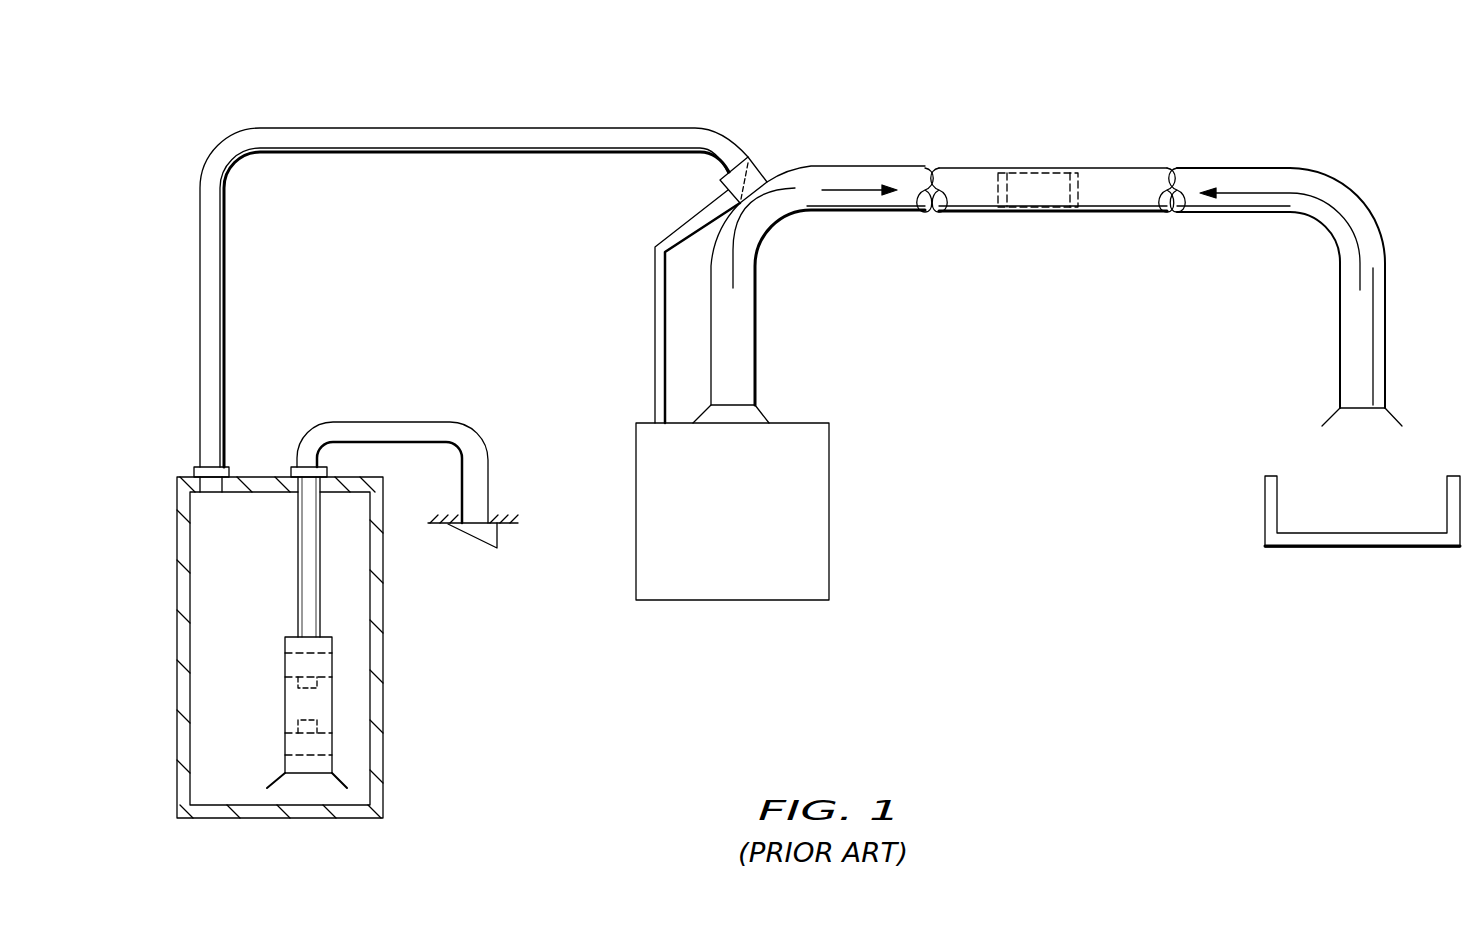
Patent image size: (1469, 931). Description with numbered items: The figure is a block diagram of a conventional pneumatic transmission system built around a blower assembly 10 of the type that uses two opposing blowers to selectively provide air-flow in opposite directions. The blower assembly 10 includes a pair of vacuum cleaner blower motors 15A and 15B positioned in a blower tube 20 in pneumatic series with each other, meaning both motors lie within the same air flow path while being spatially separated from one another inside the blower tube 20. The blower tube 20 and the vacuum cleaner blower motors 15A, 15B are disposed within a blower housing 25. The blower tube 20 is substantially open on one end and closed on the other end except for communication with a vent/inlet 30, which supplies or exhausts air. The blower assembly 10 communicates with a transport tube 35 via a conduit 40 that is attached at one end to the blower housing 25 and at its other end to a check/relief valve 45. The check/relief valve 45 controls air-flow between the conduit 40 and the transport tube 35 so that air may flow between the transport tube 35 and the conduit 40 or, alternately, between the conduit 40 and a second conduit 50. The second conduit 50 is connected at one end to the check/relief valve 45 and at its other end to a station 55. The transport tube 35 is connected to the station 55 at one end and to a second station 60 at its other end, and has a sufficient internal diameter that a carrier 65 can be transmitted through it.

The blower assembly 10 is at (156, 654).
The vacuum cleaner blower motor 15A is at (283, 667).
The vacuum cleaner blower motor 15B is at (283, 743).
The blower tube 20 is at (285, 645).
The blower housing 25 is at (177, 739).
The vent/inlet 30 is at (388, 421).
The transport tube 35 is at (1125, 168).
The conduit 40 is at (418, 127).
The check/relief valve 45 is at (718, 182).
The second conduit 50 is at (653, 295).
The station 55 is at (636, 518).
The second station 60 is at (1362, 547).
The carrier 65 is at (1038, 172).